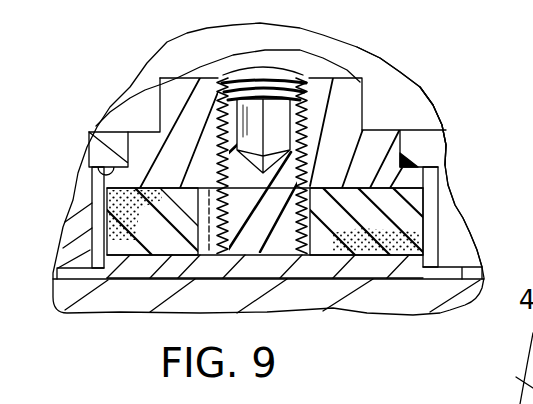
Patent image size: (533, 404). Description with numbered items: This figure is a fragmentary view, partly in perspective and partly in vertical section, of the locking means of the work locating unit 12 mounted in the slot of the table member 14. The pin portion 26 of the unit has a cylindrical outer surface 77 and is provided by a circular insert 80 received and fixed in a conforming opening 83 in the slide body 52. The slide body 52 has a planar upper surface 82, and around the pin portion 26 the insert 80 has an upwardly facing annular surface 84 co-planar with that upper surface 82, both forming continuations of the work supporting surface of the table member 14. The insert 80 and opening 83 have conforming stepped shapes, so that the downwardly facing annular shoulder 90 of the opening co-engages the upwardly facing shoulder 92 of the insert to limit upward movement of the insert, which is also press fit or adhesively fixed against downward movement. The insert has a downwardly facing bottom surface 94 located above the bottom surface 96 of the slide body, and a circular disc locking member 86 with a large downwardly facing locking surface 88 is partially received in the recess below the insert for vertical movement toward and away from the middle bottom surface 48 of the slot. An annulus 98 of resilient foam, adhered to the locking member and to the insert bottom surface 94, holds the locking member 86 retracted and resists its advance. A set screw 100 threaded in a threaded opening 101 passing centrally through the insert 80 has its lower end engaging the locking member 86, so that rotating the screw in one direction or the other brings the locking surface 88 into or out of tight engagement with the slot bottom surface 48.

The work locating unit 12 is at (146, 55).
The table member 14 is at (88, 304).
The pin portion 26 is at (364, 110).
The middle bottom surface of the slot 48 is at (168, 276).
The slide body 52 is at (445, 157).
The cylindrical outer surface 77 is at (159, 103).
The circular insert 80 is at (188, 62).
The planar upper surface 82 is at (425, 115).
The conforming opening 83 is at (128, 130).
The upwardly facing annular surface 84 is at (383, 118).
The circular disc locking member 86 is at (424, 272).
The downwardly facing locking surface 88 is at (350, 258).
The downwardly facing annular shoulder 90 is at (90, 155).
The upwardly facing shoulder 92 is at (416, 158).
The downwardly facing bottom surface 94 is at (432, 212).
The bottom surface of the slide body 96 is at (482, 278).
The annulus of resilient foam material 98 is at (117, 238).
The set screw 100 is at (264, 80).
The threaded opening 101 is at (294, 54).